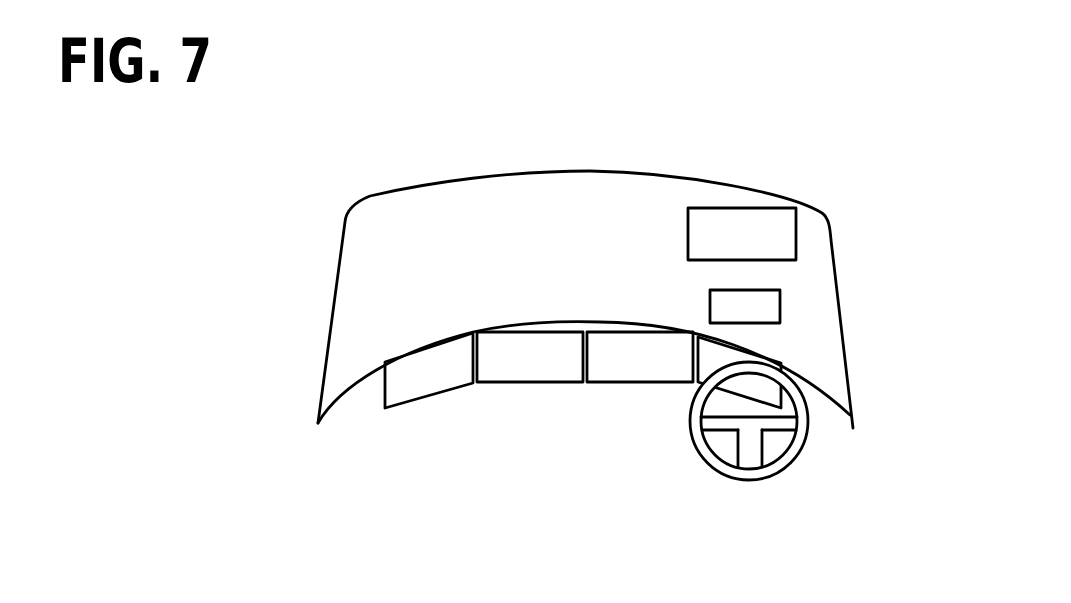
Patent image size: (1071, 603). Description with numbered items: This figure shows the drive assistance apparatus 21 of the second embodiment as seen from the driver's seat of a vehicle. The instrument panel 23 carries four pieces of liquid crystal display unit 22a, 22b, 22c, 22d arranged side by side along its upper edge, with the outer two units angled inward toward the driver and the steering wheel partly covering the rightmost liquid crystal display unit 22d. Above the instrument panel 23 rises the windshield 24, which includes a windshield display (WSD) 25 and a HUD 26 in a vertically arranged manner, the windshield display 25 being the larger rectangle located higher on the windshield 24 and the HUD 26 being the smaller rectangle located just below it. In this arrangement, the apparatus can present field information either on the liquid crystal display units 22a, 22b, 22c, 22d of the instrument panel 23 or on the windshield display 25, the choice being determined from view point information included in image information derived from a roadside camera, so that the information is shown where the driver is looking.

The drive assistance apparatus 21 is at (577, 322).
The liquid crystal display unit 22a is at (433, 380).
The liquid crystal display unit 22b is at (520, 367).
The liquid crystal display unit 22c is at (620, 372).
The liquid crystal display unit 22d is at (707, 358).
The instrument panel 23 is at (355, 390).
The windshield 24 is at (365, 252).
The windshield display (WSD) 25 is at (777, 238).
The HUD 26 is at (770, 304).